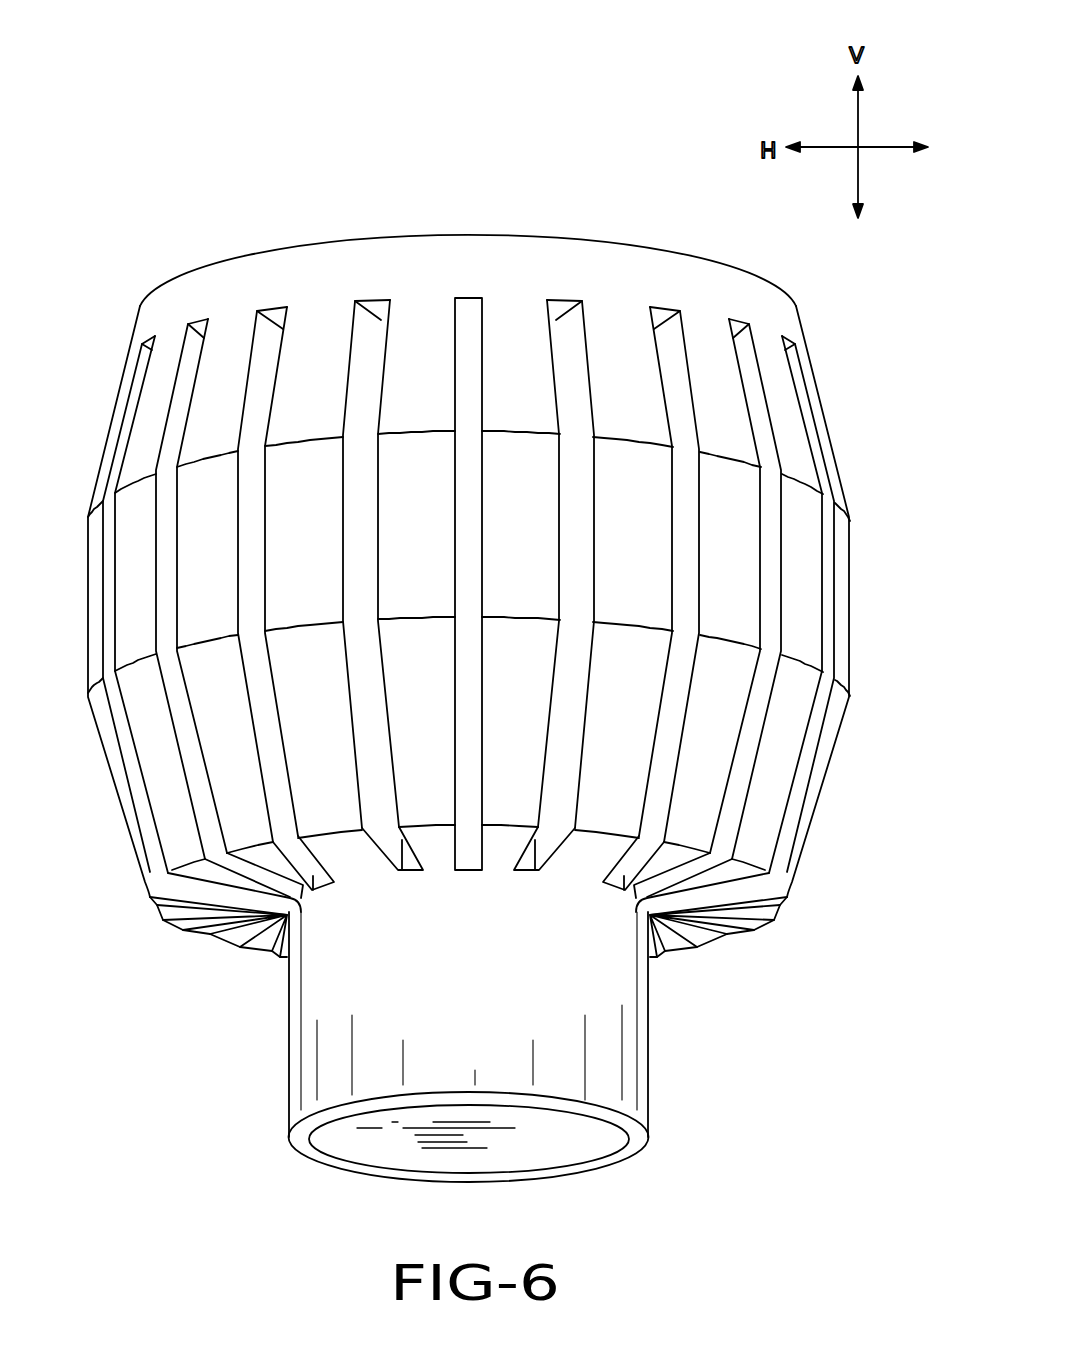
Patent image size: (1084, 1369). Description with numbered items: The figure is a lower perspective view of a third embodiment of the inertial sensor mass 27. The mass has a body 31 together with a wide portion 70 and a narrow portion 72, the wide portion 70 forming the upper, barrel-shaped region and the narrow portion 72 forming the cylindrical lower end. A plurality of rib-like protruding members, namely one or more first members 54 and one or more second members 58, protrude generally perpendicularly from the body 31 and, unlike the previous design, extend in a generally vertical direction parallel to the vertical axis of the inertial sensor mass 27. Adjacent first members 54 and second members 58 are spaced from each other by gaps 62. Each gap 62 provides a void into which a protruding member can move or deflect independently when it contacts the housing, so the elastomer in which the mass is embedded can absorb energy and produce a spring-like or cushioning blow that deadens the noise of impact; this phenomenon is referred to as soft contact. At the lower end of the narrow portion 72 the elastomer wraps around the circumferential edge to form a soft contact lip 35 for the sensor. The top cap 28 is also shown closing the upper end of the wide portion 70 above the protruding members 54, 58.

The inertial sensor mass 27 is at (132, 322).
The top cap 28 is at (390, 235).
The body 31 is at (272, 252).
The soft contact lip 35 is at (333, 1148).
The first member 54 is at (508, 327).
The second member 58 is at (620, 335).
The gap 62 is at (560, 317).
The wide portion 70 is at (855, 578).
The narrow portion 72 is at (662, 1033).